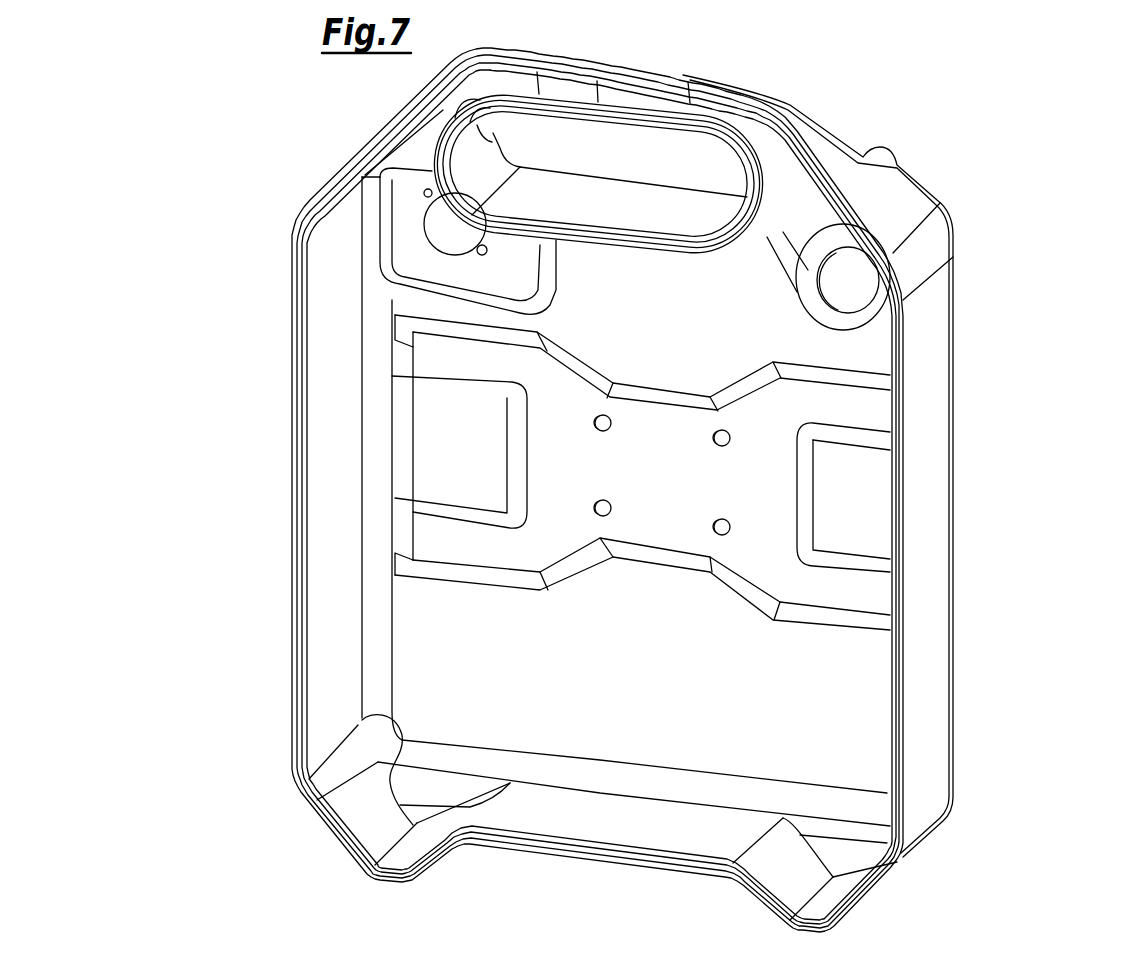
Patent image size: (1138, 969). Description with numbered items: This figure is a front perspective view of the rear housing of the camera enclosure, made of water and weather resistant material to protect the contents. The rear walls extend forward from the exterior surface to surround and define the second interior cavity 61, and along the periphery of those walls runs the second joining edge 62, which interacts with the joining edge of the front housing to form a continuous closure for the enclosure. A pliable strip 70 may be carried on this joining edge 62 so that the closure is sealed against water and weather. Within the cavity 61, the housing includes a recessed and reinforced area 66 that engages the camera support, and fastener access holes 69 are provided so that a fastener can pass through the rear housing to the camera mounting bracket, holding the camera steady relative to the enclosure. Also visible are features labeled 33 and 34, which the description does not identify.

The mounting boss with hole 33 is at (836, 280).
The raised boss 34 is at (418, 222).
The second interior cavity 61 is at (783, 686).
The second joining edge 62 is at (288, 693).
The recessed and reinforced area 66 is at (408, 374).
The fastener access holes 69 is at (738, 439).
The pliable strip 70 is at (292, 343).